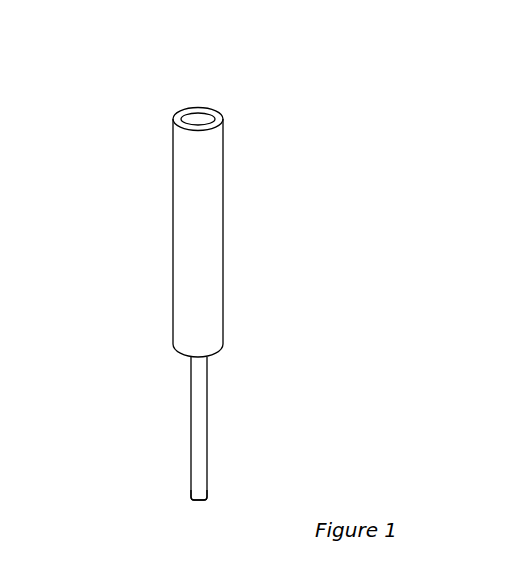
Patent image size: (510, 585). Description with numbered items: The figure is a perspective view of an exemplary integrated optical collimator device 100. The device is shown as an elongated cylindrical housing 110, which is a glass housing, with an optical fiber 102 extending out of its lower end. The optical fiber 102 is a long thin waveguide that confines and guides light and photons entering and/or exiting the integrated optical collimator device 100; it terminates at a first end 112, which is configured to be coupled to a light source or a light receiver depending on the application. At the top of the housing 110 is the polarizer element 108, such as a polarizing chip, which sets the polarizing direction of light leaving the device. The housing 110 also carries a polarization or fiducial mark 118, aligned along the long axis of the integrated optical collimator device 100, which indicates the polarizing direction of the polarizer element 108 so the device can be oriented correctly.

The integrated optical collimator device 100 is at (107, 132).
The optical fiber 102 is at (200, 428).
The polarizer element 108 is at (207, 112).
The housing 110 is at (198, 268).
The first end 112 is at (190, 498).
The fiducial mark 118 is at (173, 115).